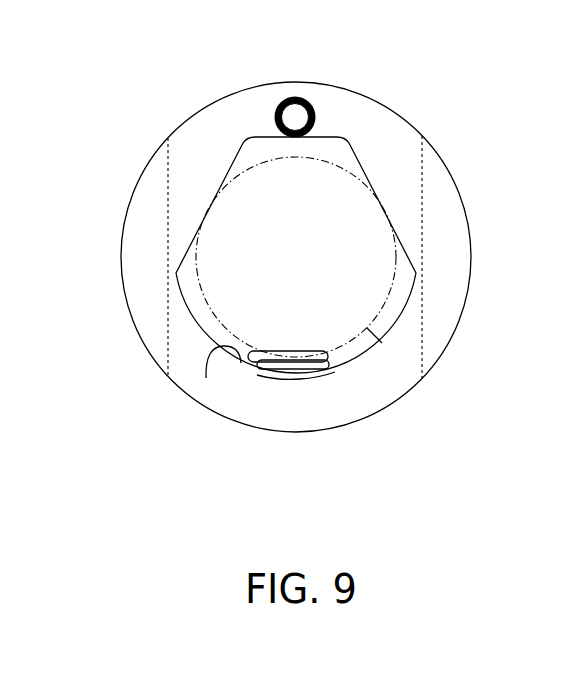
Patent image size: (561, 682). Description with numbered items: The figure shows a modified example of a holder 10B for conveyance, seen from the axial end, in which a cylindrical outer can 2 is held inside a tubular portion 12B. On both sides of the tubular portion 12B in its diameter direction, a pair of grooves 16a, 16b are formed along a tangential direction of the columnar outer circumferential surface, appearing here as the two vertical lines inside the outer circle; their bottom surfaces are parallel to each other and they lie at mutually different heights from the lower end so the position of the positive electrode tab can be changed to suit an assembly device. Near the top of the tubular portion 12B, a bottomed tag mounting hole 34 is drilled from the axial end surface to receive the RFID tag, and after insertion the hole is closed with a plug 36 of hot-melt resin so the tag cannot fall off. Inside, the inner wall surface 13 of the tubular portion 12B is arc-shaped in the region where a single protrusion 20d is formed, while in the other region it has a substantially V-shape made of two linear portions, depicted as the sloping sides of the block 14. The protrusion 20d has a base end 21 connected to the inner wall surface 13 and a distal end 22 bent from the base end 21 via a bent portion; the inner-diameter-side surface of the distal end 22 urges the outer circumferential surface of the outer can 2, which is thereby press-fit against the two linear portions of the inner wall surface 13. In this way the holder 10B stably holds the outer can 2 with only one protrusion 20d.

The holder for conveyance 10B is at (407, 86).
The tubular portion 12B is at (188, 118).
The holding block 14 is at (180, 284).
The inner wall surface 13 is at (206, 356).
The groove 16a is at (423, 345).
The groove 16b is at (166, 360).
The outer can 2 is at (383, 353).
The protrusion 20d is at (318, 372).
The base end 21 is at (270, 380).
The distal end 22 is at (297, 350).
The tag mounting hole 34 is at (306, 100).
The plug 36 is at (286, 100).